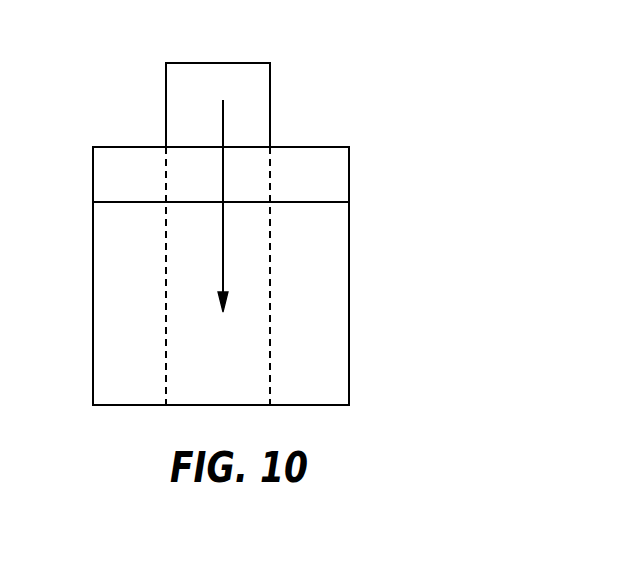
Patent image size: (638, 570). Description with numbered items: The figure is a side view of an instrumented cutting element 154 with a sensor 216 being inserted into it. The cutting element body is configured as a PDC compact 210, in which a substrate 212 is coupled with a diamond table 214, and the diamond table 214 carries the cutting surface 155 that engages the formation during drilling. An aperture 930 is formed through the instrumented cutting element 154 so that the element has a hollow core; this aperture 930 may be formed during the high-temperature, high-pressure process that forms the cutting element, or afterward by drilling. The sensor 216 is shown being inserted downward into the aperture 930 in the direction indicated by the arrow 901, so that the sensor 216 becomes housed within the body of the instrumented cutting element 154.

The instrumented cutting element 154 is at (390, 103).
The cutting surface 155 is at (133, 146).
The PDC compact 210 is at (478, 102).
The substrate 212 is at (338, 295).
The diamond table 214 is at (335, 175).
The sensor 216 is at (271, 102).
The arrow 901 is at (225, 252).
The aperture 930 is at (193, 350).